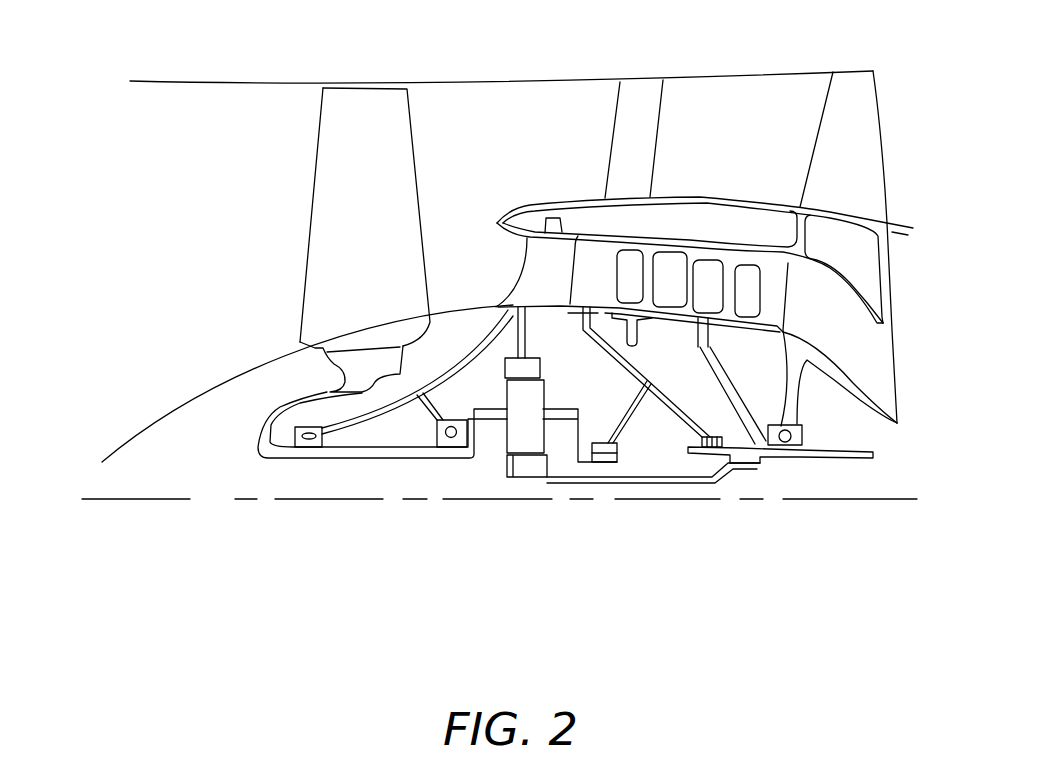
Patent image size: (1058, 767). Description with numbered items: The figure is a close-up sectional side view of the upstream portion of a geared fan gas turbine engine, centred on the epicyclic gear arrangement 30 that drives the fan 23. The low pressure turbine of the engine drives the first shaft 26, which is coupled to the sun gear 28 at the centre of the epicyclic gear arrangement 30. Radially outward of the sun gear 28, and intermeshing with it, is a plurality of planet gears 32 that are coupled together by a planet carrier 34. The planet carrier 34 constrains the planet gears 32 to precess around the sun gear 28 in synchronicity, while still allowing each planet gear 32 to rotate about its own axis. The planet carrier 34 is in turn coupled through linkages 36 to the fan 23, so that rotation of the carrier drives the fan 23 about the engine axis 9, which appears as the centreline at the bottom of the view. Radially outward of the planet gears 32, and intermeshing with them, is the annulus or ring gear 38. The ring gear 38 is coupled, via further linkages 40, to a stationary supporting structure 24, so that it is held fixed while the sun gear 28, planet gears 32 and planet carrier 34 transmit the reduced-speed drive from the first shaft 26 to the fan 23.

The engine axis 9 is at (195, 502).
The fan 23 is at (340, 215).
The stationary supporting structure 24 is at (525, 265).
The first shaft 26 is at (652, 480).
The sun gear 28 is at (526, 470).
The epicyclic gear arrangement 30 is at (493, 452).
The planet gears 32 is at (510, 443).
The planet carrier 34 is at (568, 445).
The linkages 36 is at (478, 452).
The ring gear 38 is at (531, 368).
The linkages 40 is at (528, 340).